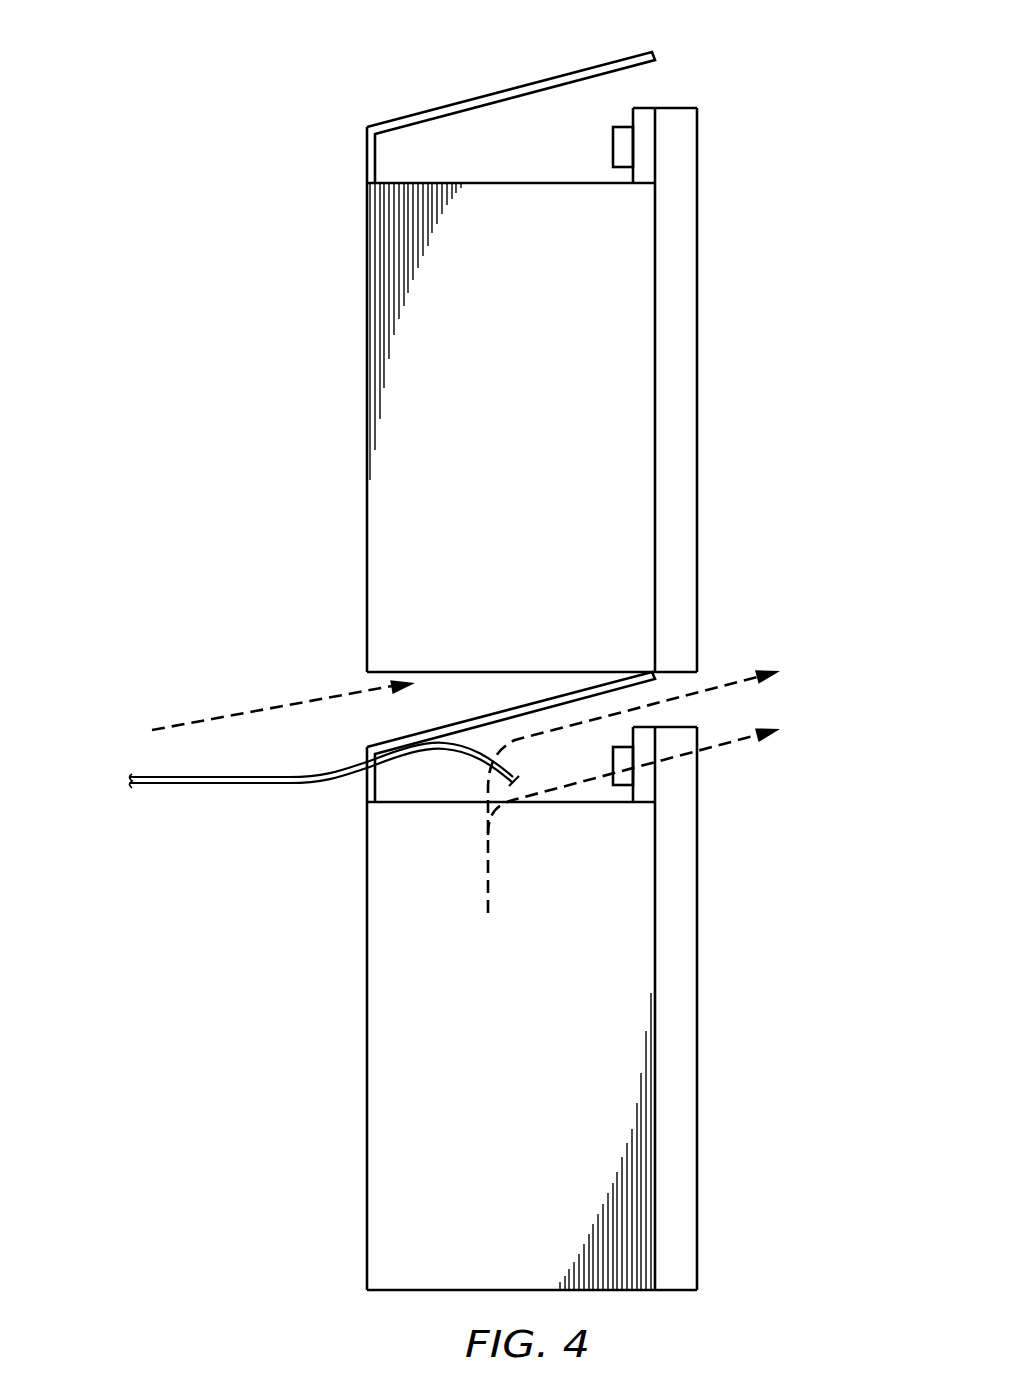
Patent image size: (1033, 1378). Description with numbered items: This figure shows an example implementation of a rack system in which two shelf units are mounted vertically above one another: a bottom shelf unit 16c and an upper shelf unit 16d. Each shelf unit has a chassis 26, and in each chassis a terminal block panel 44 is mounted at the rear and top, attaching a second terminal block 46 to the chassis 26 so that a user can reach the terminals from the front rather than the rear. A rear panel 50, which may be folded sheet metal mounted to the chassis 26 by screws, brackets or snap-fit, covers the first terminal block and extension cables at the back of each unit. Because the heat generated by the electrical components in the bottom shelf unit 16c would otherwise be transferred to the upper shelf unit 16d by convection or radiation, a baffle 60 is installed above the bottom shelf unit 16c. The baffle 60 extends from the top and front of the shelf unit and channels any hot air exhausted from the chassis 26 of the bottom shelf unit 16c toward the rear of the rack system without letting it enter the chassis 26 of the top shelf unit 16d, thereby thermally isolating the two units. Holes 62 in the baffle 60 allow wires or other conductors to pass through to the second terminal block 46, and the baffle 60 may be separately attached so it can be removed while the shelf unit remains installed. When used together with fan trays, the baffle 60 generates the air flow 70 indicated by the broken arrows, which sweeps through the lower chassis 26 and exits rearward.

The bottom shelf unit 16c is at (314, 1022).
The upper shelf unit 16d is at (304, 414).
The chassis 26 is at (532, 403).
The terminal block panel 44 is at (643, 108).
The second terminal block 46 is at (613, 147).
The rear panel 50 is at (673, 352).
The baffle 60 is at (510, 88).
The holes 62 is at (352, 792).
The air flow 70 is at (277, 707).